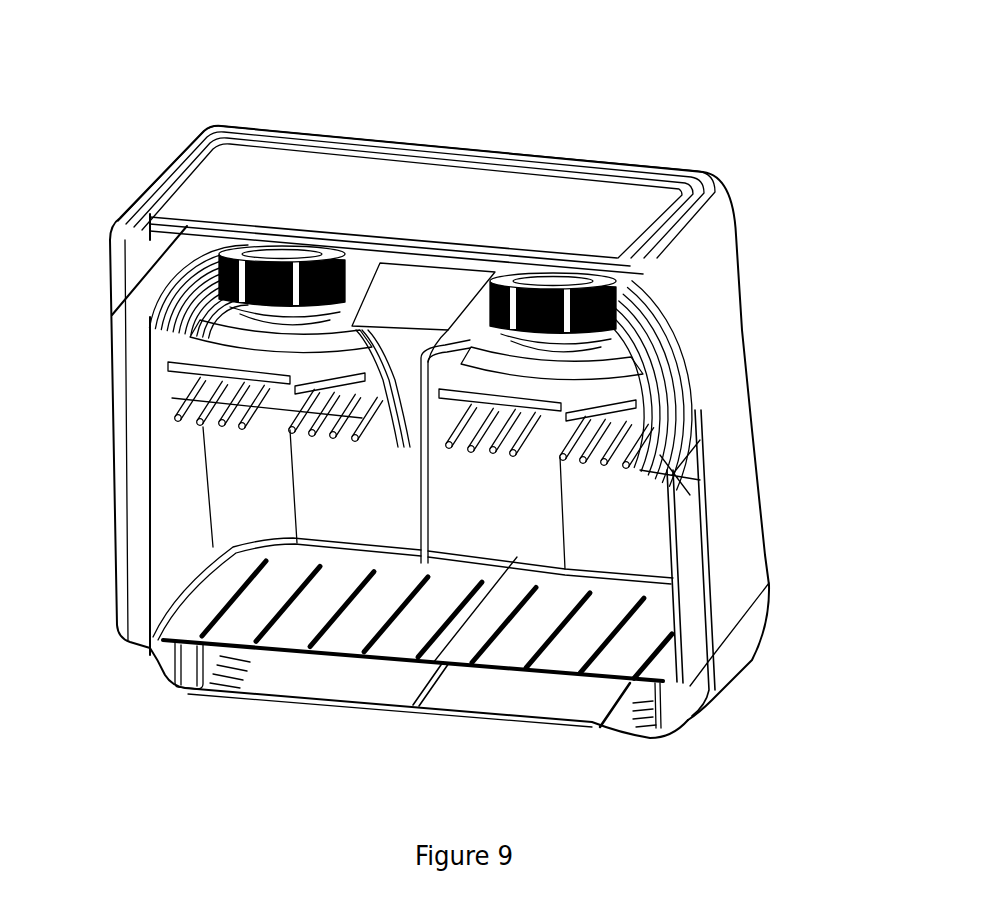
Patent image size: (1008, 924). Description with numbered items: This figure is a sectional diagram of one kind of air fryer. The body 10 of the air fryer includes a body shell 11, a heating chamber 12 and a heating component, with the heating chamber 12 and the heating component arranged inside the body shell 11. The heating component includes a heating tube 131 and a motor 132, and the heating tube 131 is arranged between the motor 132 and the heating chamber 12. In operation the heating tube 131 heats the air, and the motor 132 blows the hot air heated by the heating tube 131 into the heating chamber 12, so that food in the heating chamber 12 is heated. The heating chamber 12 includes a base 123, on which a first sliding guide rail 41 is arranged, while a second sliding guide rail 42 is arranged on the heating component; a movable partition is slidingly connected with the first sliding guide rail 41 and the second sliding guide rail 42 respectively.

The body 10 is at (587, 147).
The body shell 11 is at (742, 240).
The heating chamber 12 is at (197, 522).
The base 123 is at (607, 663).
The heating tube 131 is at (185, 398).
The motor 132 is at (243, 363).
The first sliding guide rail 41 is at (427, 647).
The second sliding guide rail 42 is at (400, 450).